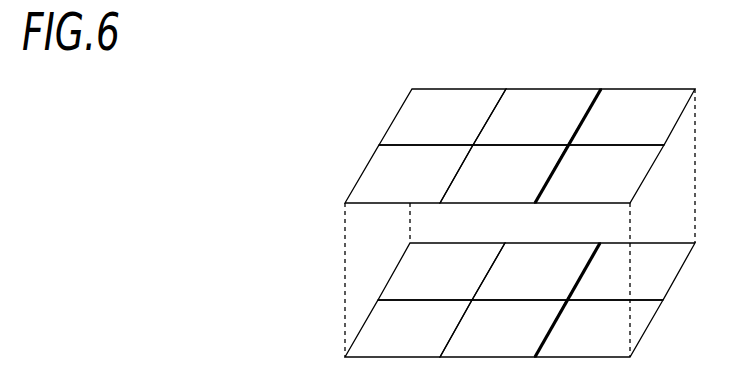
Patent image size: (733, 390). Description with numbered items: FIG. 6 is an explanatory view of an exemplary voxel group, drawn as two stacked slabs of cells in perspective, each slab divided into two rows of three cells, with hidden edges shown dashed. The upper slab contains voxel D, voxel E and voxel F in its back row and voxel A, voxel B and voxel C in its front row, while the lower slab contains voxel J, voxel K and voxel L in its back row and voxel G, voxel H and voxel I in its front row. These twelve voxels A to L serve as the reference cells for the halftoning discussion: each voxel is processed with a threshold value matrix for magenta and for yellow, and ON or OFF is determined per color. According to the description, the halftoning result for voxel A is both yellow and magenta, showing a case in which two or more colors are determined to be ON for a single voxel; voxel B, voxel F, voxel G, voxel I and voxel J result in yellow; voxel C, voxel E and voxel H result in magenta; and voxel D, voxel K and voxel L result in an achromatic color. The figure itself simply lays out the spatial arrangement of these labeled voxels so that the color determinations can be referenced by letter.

The voxel A is at (409, 174).
The voxel B is at (504, 174).
The voxel C is at (599, 174).
The voxel D is at (442, 117).
The voxel E is at (537, 117).
The voxel F is at (631, 117).
The voxel G is at (408, 328).
The voxel H is at (503, 328).
The voxel I is at (599, 328).
The voxel J is at (441, 271).
The voxel K is at (536, 271).
The voxel L is at (631, 271).